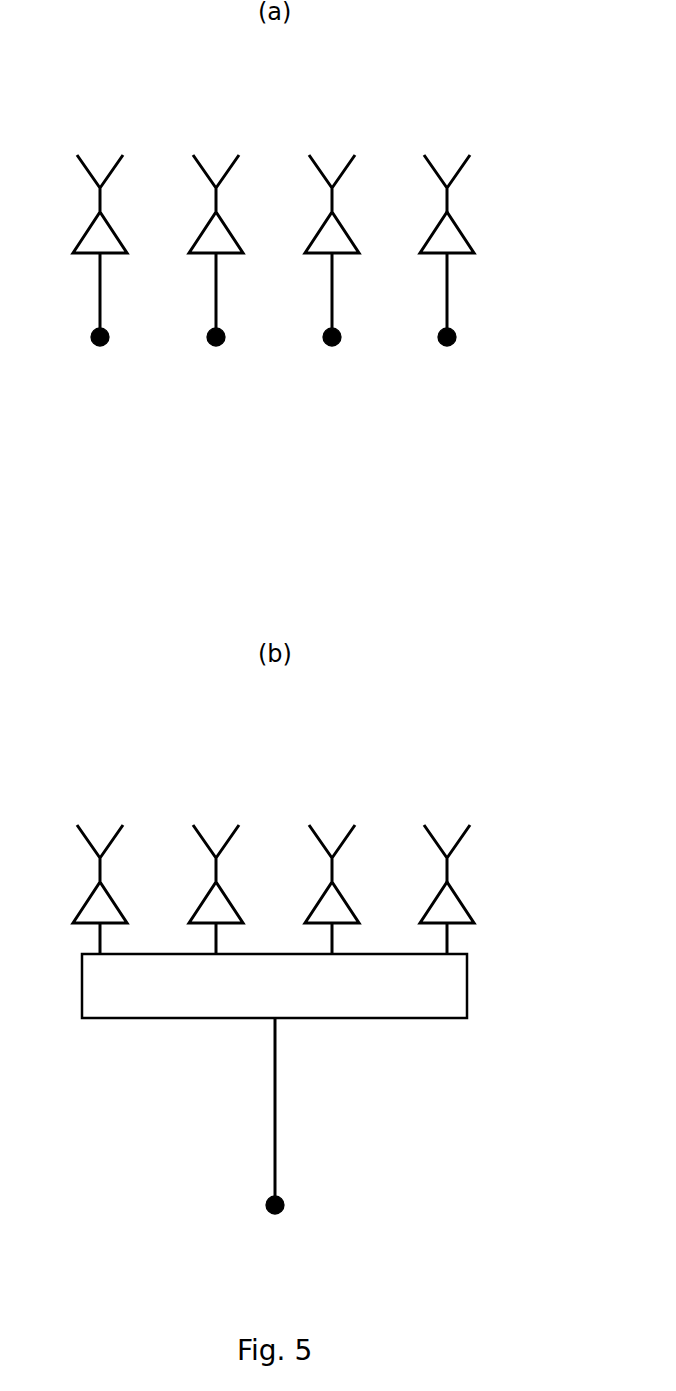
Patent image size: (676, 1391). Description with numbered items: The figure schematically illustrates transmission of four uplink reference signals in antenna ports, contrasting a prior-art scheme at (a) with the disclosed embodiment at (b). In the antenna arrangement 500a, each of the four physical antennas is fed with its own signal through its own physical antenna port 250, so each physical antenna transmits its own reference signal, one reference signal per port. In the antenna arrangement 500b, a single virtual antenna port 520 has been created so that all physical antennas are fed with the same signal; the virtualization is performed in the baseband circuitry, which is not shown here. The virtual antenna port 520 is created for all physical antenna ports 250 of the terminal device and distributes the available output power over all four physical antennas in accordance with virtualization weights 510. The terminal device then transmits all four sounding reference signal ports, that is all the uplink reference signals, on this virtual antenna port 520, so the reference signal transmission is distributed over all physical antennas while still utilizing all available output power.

The antenna arrangement 500a is at (150, 92).
The antenna arrangement 500b is at (151, 744).
The physical antenna port 250 is at (455, 337).
The virtualization weights 510 is at (467, 985).
The virtual antenna port 520 is at (284, 1207).